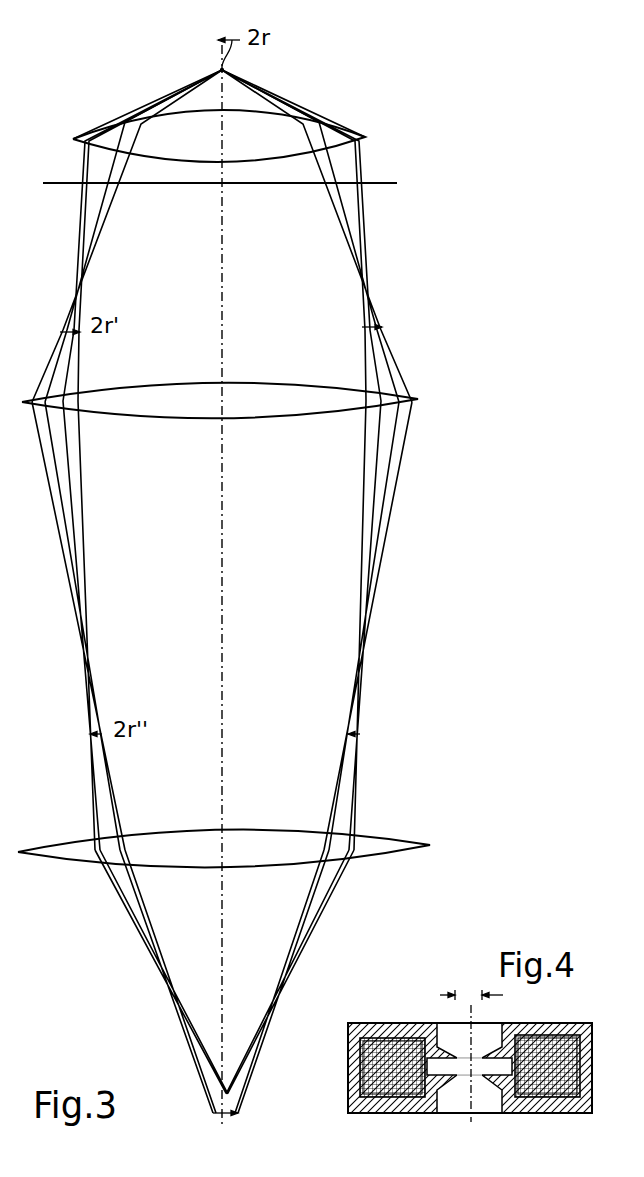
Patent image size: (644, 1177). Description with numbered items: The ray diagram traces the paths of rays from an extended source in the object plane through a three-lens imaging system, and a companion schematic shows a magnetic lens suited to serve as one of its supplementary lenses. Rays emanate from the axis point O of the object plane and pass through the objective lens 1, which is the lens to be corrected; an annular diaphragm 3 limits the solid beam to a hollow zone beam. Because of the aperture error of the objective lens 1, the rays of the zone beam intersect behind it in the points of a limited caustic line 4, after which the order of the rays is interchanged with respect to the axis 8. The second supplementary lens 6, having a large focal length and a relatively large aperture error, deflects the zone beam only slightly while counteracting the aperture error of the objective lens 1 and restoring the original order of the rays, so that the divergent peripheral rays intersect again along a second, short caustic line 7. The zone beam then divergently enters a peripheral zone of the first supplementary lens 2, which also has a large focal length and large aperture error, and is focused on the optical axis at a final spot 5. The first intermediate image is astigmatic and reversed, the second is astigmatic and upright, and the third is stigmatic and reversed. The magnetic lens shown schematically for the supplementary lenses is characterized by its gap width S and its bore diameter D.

In FIG. 3, the objective lens 1 is at (350, 133).
In FIG. 3, the first supplementary lens 2 is at (375, 845).
In FIG. 3, the annular diaphragm 3 is at (380, 178).
In FIG. 3, the caustic line 4 is at (360, 326).
In FIG. 3, the final focused spot on specimen 5 is at (226, 1116).
In FIG. 3, the second supplementary lens 6 is at (300, 392).
In FIG. 3, the second caustic line 7 is at (347, 733).
In FIG. 3, the axis 8 is at (223, 657).
In FIG. 3, the axis point of the object plane O is at (217, 68).
In FIG. 4, the gap width S is at (442, 1068).
In FIG. 4, the bore diameter D is at (471, 986).